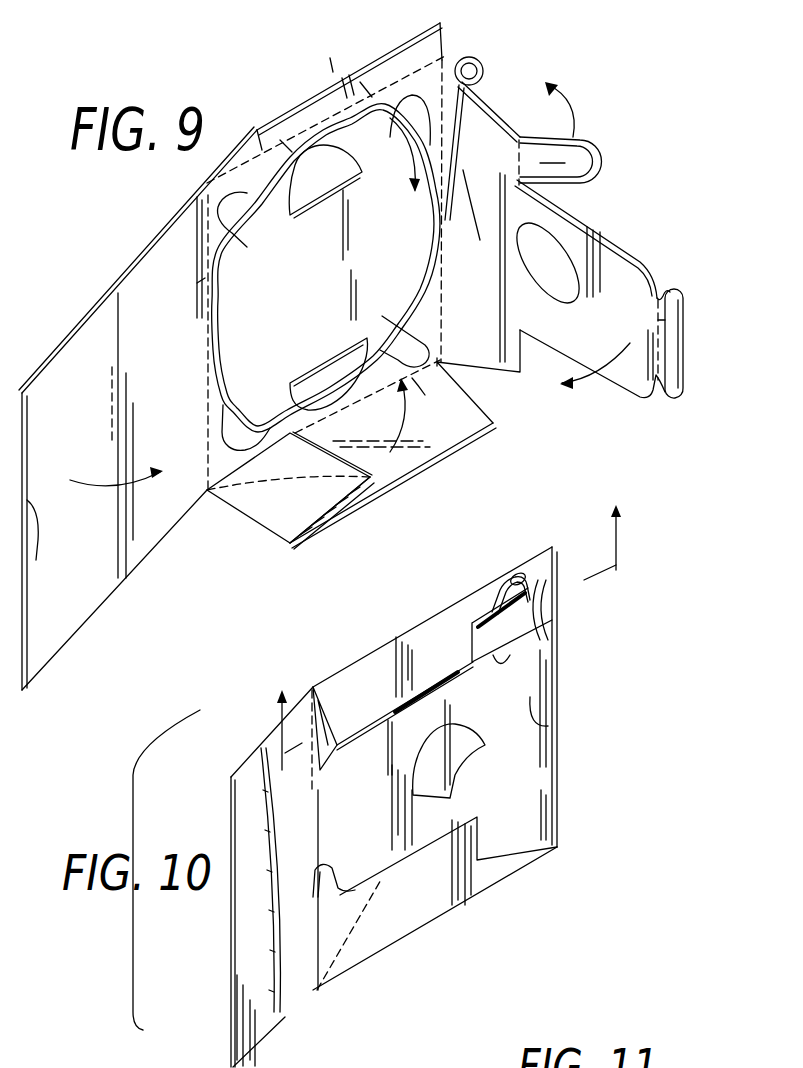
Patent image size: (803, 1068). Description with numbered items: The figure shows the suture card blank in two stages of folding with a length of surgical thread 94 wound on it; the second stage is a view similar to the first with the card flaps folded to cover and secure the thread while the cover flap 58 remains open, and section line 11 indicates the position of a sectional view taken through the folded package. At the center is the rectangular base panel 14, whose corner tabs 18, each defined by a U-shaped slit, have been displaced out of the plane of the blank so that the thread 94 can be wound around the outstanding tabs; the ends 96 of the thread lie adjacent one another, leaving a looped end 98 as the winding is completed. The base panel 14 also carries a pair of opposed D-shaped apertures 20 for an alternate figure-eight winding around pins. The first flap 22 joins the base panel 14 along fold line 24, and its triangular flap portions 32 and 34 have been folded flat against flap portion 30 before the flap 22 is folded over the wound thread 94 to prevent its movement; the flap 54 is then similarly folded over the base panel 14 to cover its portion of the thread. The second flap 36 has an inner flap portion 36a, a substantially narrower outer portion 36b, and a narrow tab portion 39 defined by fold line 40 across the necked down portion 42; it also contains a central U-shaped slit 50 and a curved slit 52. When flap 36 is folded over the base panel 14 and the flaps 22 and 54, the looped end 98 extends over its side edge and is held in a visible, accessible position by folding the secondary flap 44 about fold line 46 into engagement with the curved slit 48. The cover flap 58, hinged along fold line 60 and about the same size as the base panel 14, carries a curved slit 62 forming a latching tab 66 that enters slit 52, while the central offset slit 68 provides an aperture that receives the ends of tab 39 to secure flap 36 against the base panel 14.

In FIG. 10, the section line 11- 11 is at (451, 622).
In FIG. 9, the base panel 14 is at (400, 277).
In FIG. 10, the base panel 14 is at (429, 820).
In FIG. 9, the tab 18 is at (412, 94).
In FIG. 9, the D-shaped aperture 20 is at (316, 186).
In FIG. 9, the first flap 22 is at (453, 427).
In FIG. 10, the first flap 22 is at (410, 906).
In FIG. 9, the fold line 24 is at (435, 396).
In FIG. 9, the flap portion 30 is at (357, 493).
In FIG. 9, the flap portion 32 is at (310, 503).
In FIG. 9, the flap portion 34 is at (272, 468).
In FIG. 9, the second flap 36 is at (617, 257).
In FIG. 10, the second flap 36 is at (530, 776).
In FIG. 9, the inner flap portion 36a is at (506, 356).
In FIG. 9, the outer portion 36b is at (647, 372).
In FIG. 9, the tab portion 39 is at (667, 347).
In FIG. 9, the fold line 40 is at (657, 322).
In FIG. 9, the necked down portion 42 is at (660, 277).
In FIG. 9, the secondary flap 44 is at (592, 158).
In FIG. 10, the secondary flap 44 is at (540, 602).
In FIG. 9, the fold line 46 is at (557, 180).
In FIG. 9, the curved slit 48 is at (465, 135).
In FIG. 10, the curved slit 48 is at (545, 630).
In FIG. 9, the U-shaped slit 50 is at (572, 260).
In FIG. 10, the U-shaped slit 50 is at (455, 768).
In FIG. 9, the curved slit 52 is at (462, 240).
In FIG. 10, the curved slit 52 is at (548, 708).
In FIG. 9, the flap 54 is at (293, 125).
In FIG. 10, the flap 54 is at (423, 628).
In FIG. 9, the cover flap 58 is at (147, 302).
In FIG. 10, the cover flap 58 is at (270, 733).
In FIG. 9, the fold line 60 is at (207, 278).
In FIG. 10, the fold line 60 is at (303, 725).
In FIG. 9, the curved slit 62 is at (38, 520).
In FIG. 10, the curved slit 62 is at (240, 915).
In FIG. 9, the latching tab 66 is at (40, 530).
In FIG. 10, the latching tab 66 is at (243, 917).
In FIG. 9, the offset slit 68 is at (215, 337).
In FIG. 10, the offset slit 68 is at (320, 840).
In FIG. 9, the surgical thread 94 is at (288, 147).
In FIG. 10, the surgical thread 94 is at (326, 725).
In FIG. 9, the ends of the thread 96 is at (368, 96).
In FIG. 9, the looped end 98 is at (482, 60).
In FIG. 10, the looped end 98 is at (528, 565).